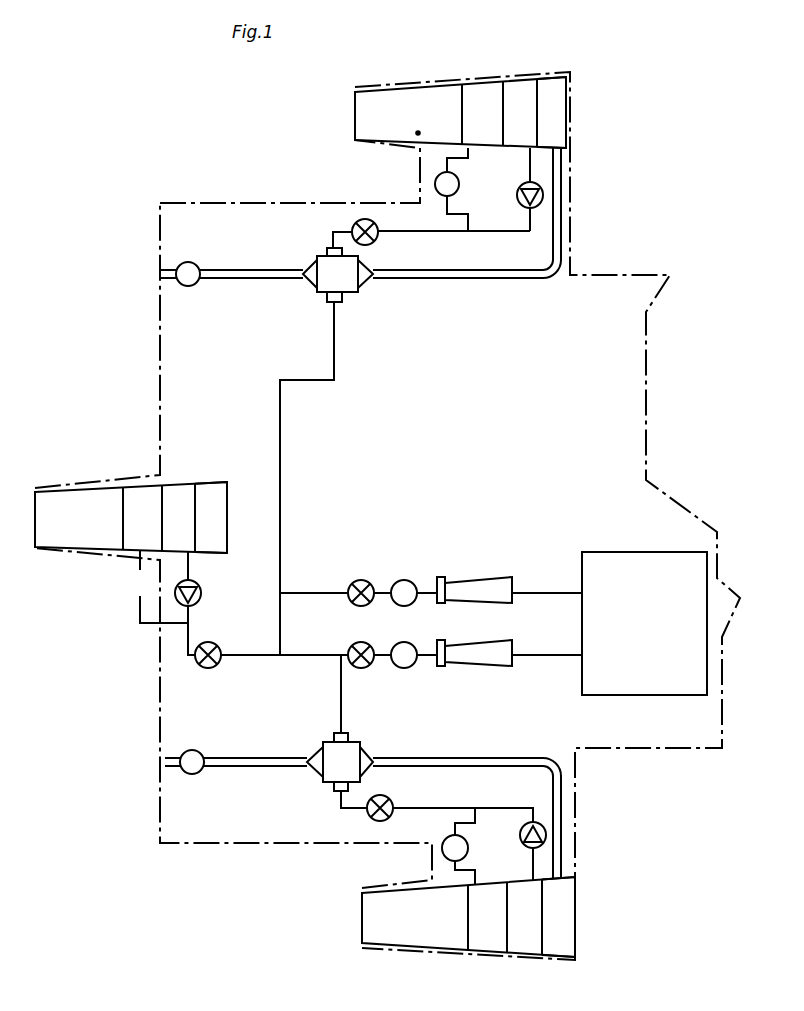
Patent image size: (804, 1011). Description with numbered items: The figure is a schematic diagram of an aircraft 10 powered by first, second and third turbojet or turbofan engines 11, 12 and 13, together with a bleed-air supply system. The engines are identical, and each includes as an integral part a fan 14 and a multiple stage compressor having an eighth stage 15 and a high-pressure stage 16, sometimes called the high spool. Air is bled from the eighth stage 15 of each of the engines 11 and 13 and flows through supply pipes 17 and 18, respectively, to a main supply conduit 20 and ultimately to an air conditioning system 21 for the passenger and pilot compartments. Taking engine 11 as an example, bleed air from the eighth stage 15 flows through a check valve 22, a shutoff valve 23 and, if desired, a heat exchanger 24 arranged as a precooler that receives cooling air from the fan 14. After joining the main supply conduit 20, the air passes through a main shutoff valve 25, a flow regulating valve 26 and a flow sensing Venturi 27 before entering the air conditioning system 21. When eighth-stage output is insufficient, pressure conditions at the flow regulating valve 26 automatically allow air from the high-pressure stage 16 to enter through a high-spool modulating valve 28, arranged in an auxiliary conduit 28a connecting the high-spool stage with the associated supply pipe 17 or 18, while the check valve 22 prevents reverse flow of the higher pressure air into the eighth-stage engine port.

The aircraft 10 is at (152, 343).
The first turbofan engine 11 is at (413, 107).
The second turbofan engine 12 is at (86, 505).
The third turbofan engine 13 is at (407, 933).
The fan 14 is at (555, 93).
The eighth stage 15 is at (518, 93).
The high-pressure stage 16 is at (482, 100).
The supply pipe 17 is at (445, 231).
The supply pipe 18 is at (342, 703).
The main supply conduit 20 is at (553, 591).
The air conditioning system 21 is at (582, 672).
The check valve 22 is at (518, 193).
The shutoff valve 23 is at (353, 226).
The heat exchanger 24 is at (345, 288).
The main shutoff valve 25 is at (352, 584).
The flow regulating valve 26 is at (407, 645).
The flow sensing Venturi 27 is at (487, 647).
The high-spool modulating valve 28 is at (457, 175).
The auxiliary conduit 28a is at (449, 208).